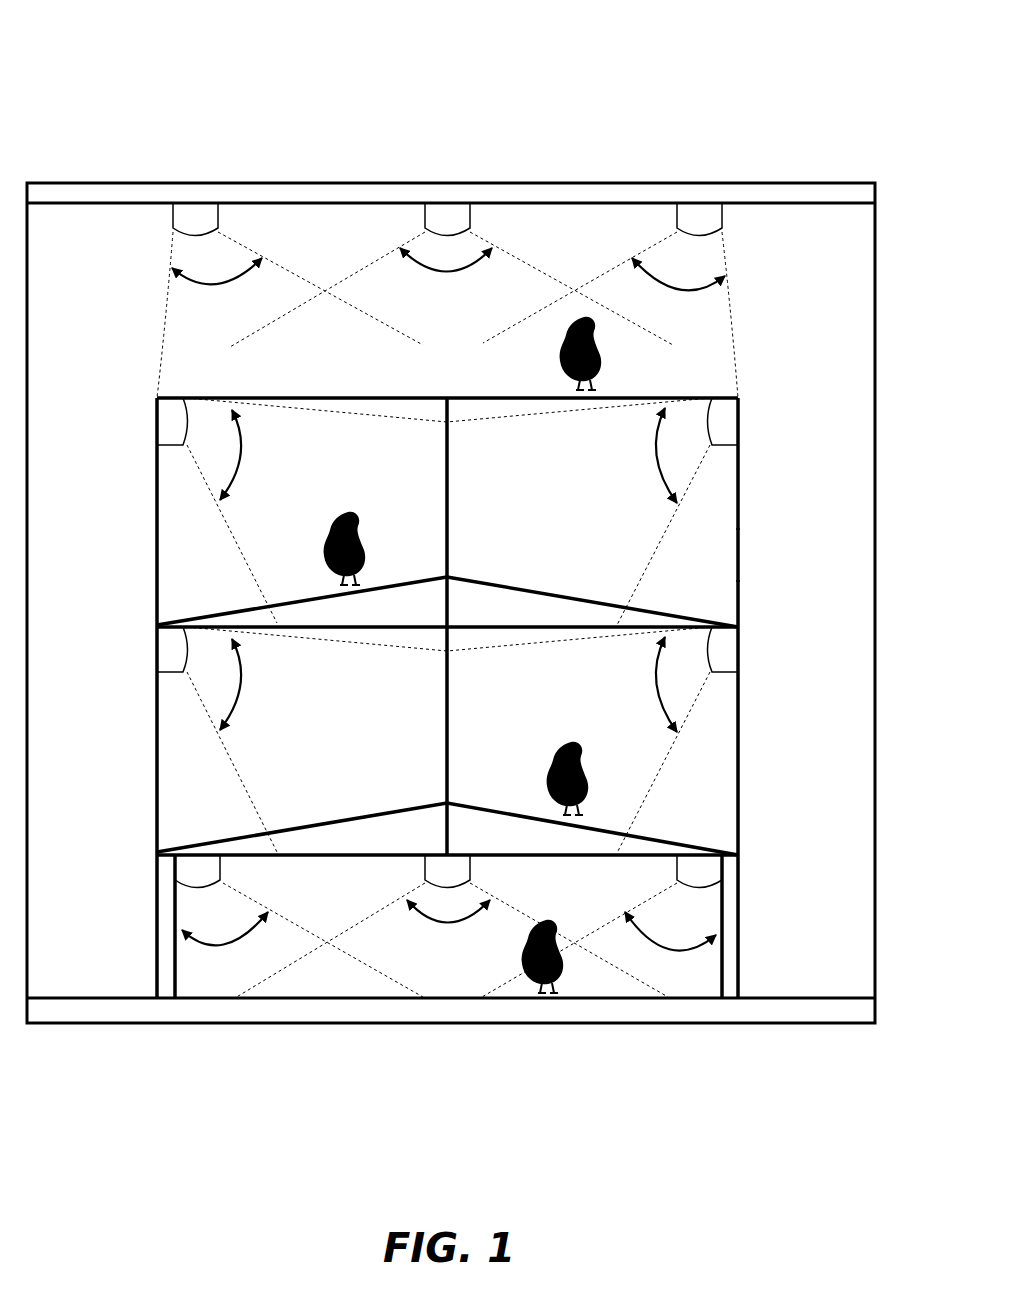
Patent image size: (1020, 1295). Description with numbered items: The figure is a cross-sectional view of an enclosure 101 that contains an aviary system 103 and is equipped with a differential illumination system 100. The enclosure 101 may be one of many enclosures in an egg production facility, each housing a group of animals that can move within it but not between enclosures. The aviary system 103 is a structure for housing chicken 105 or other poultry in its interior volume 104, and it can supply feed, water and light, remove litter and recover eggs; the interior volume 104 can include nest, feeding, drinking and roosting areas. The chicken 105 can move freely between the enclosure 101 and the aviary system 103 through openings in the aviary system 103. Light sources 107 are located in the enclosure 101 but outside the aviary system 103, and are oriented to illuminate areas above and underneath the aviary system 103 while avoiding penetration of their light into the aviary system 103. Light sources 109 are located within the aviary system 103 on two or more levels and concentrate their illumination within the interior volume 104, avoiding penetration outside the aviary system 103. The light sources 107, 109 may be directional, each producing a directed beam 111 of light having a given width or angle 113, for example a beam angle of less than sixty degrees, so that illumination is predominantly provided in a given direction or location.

The differential illumination system 100 is at (668, 29).
The enclosure 101 is at (848, 1024).
The aviary system 103 is at (740, 532).
The interior volume 104 is at (704, 583).
The chicken 105 is at (348, 514).
The light sources 107 is at (207, 212).
The light sources 109 is at (162, 424).
The directed beam 111 is at (736, 304).
The angle 113 is at (676, 285).